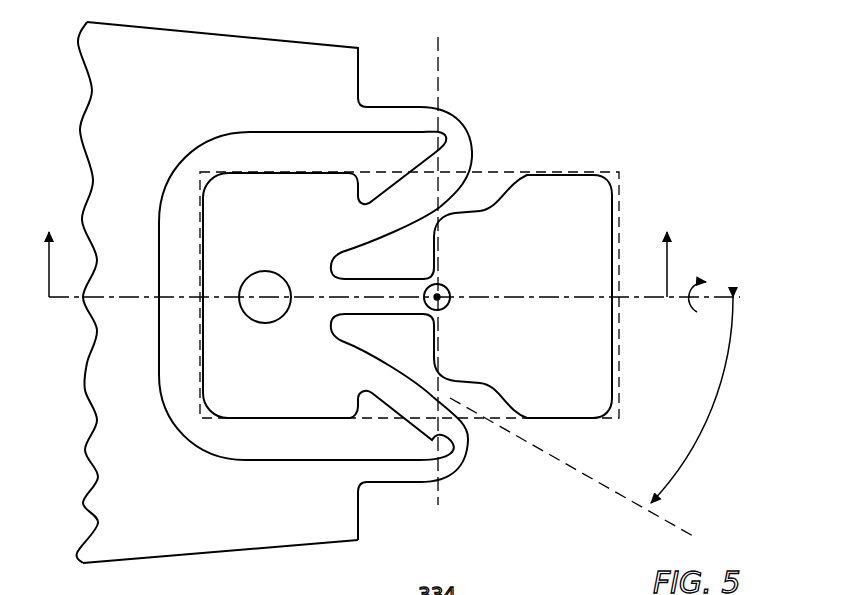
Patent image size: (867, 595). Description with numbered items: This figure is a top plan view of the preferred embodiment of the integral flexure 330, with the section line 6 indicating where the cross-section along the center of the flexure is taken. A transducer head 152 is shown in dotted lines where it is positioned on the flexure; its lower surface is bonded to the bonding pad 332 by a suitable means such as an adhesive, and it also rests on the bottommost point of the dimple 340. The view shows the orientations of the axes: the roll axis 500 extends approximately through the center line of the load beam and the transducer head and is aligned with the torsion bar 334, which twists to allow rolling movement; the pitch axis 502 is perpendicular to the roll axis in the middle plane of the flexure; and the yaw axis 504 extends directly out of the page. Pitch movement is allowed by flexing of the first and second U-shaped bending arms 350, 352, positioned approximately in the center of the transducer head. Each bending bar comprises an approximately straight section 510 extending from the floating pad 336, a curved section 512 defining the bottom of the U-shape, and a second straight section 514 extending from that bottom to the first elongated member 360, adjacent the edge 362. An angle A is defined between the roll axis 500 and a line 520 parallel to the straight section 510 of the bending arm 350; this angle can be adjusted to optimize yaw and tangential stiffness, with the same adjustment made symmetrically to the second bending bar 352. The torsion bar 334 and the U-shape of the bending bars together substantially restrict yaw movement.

The transducer head 152 is at (213, 173).
The integral flexure 330 is at (650, 172).
The bonding pad 332 is at (546, 296).
The torsion bar 334 is at (362, 290).
The floating pad 336 is at (306, 296).
The dimple 340 is at (267, 305).
The first bending arm 350 is at (447, 460).
The second bending arm 352 is at (452, 133).
The first elongated member 360 is at (305, 516).
The upper edge of load beam 362 is at (240, 52).
The roll axis 500 is at (702, 334).
The pitch axis 502 is at (478, 43).
The yaw axis 504 is at (448, 305).
The straight section 510 is at (408, 387).
The curved section 512 is at (460, 440).
The second straight section 514 is at (393, 472).
The line 520 is at (670, 517).
The angle A is at (710, 413).
The section line 6- 6 is at (357, 247).